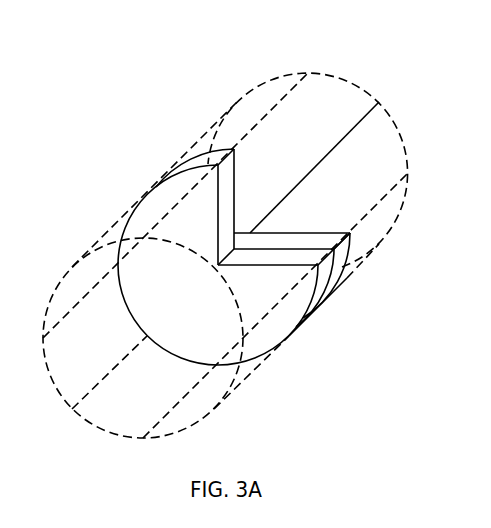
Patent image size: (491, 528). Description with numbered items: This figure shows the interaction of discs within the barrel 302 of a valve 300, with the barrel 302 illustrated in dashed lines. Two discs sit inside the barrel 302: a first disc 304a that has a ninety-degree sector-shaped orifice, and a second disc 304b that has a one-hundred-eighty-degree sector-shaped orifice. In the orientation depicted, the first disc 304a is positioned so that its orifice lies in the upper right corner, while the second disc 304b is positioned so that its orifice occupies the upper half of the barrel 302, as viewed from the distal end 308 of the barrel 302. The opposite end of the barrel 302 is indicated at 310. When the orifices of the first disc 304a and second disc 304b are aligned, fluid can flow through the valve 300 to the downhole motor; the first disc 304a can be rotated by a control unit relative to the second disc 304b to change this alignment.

The valve 300 is at (120, 102).
The barrel 302 is at (84, 258).
The first disc 304a is at (203, 320).
The second disc 304b is at (306, 233).
The distal end 308 is at (114, 449).
The second end face 310 is at (332, 52).